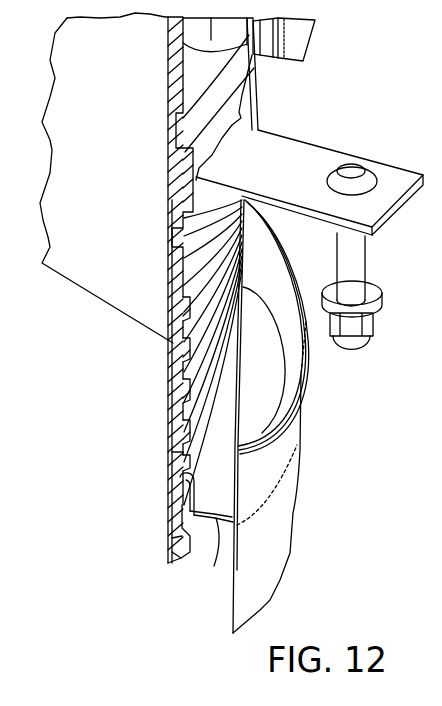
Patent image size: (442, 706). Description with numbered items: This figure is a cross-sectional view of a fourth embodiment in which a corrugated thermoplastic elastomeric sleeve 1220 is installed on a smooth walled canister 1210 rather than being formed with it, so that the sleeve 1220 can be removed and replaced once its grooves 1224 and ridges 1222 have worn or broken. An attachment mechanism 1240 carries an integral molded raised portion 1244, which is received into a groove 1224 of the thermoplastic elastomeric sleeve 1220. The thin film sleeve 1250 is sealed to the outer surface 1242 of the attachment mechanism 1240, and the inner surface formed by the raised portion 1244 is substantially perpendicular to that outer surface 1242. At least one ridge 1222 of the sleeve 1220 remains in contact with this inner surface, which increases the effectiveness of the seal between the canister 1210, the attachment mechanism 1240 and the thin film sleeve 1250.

The smooth walled canister 1210 is at (170, 305).
The thermoplastic elastomeric sleeve 1220 is at (172, 398).
The integral molded raised portion 1244 is at (172, 459).
The grooves 1224 is at (183, 478).
The ridges 1222 is at (184, 512).
The attachment mechanism 1240 is at (214, 566).
The outer surface 1242 is at (267, 443).
The thin film sleeve 1250 is at (283, 553).